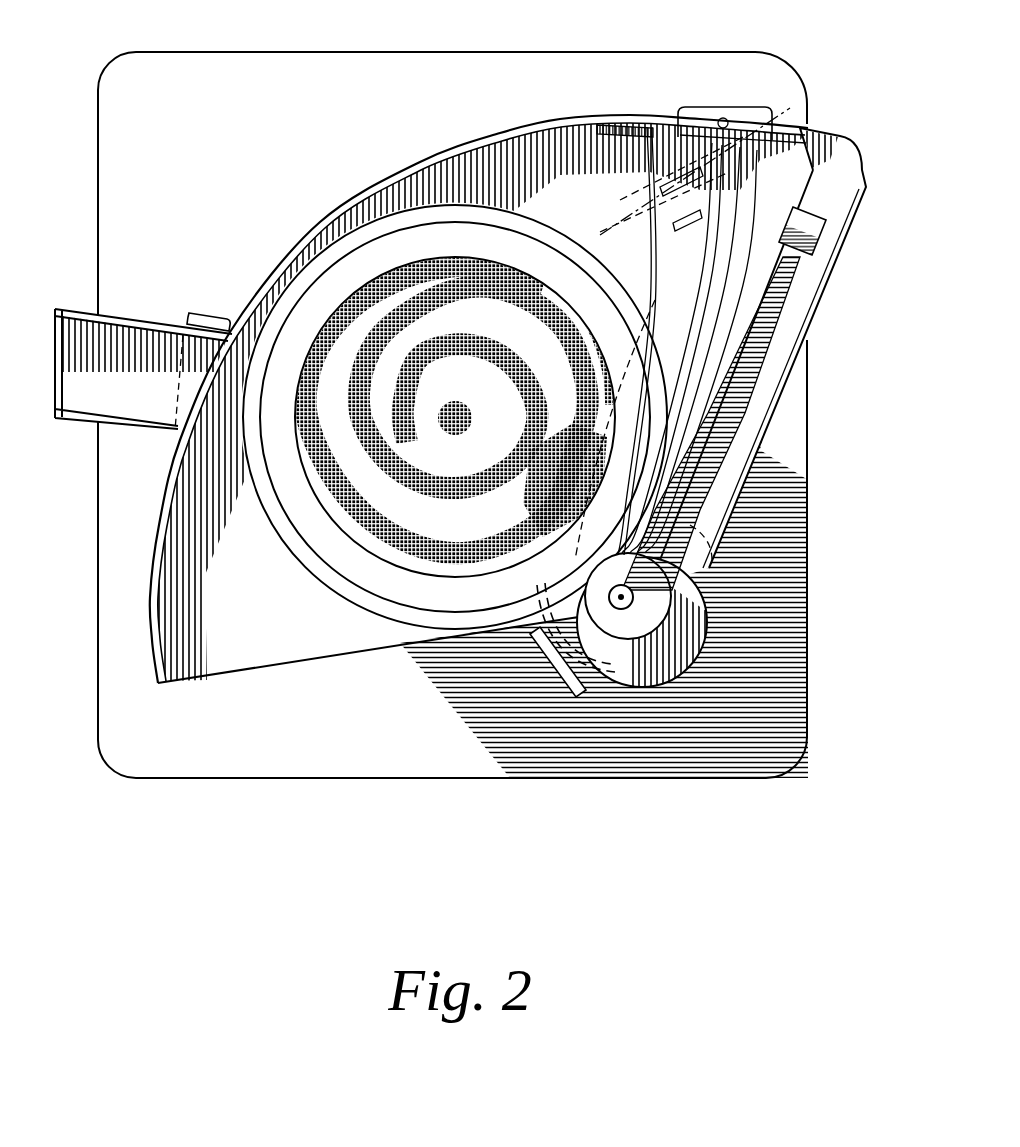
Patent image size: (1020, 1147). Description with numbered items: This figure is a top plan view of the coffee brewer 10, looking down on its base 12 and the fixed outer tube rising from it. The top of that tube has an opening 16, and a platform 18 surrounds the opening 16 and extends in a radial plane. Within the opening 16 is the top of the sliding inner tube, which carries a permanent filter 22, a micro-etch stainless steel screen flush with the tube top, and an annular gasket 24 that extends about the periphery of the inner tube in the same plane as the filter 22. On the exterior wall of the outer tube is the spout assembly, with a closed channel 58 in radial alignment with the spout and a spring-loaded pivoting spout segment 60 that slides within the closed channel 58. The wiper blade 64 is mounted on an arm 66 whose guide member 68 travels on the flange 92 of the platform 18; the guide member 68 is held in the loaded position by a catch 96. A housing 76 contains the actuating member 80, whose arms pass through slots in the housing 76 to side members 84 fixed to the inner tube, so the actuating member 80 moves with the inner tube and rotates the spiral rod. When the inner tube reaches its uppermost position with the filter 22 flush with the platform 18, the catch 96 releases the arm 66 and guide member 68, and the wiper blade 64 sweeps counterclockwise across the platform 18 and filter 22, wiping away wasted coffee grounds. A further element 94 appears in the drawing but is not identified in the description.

The coffee brewer 10 is at (777, 112).
The base 12 is at (318, 786).
The opening 16 is at (383, 591).
The platform 18 is at (270, 619).
The permanent filter 22 is at (357, 307).
The annular gasket 24 is at (467, 237).
The closed channel 58 is at (212, 317).
The pivoting spout segment 60 is at (105, 350).
The wiper blade 64 is at (656, 295).
The arm 66 is at (740, 383).
The guide member 68 is at (827, 200).
The housing 76 is at (662, 675).
The actuating member 80 is at (611, 657).
The side members 84 is at (733, 540).
The flange 92 is at (583, 118).
The guide rail 94 is at (788, 330).
The catch 96 is at (808, 128).